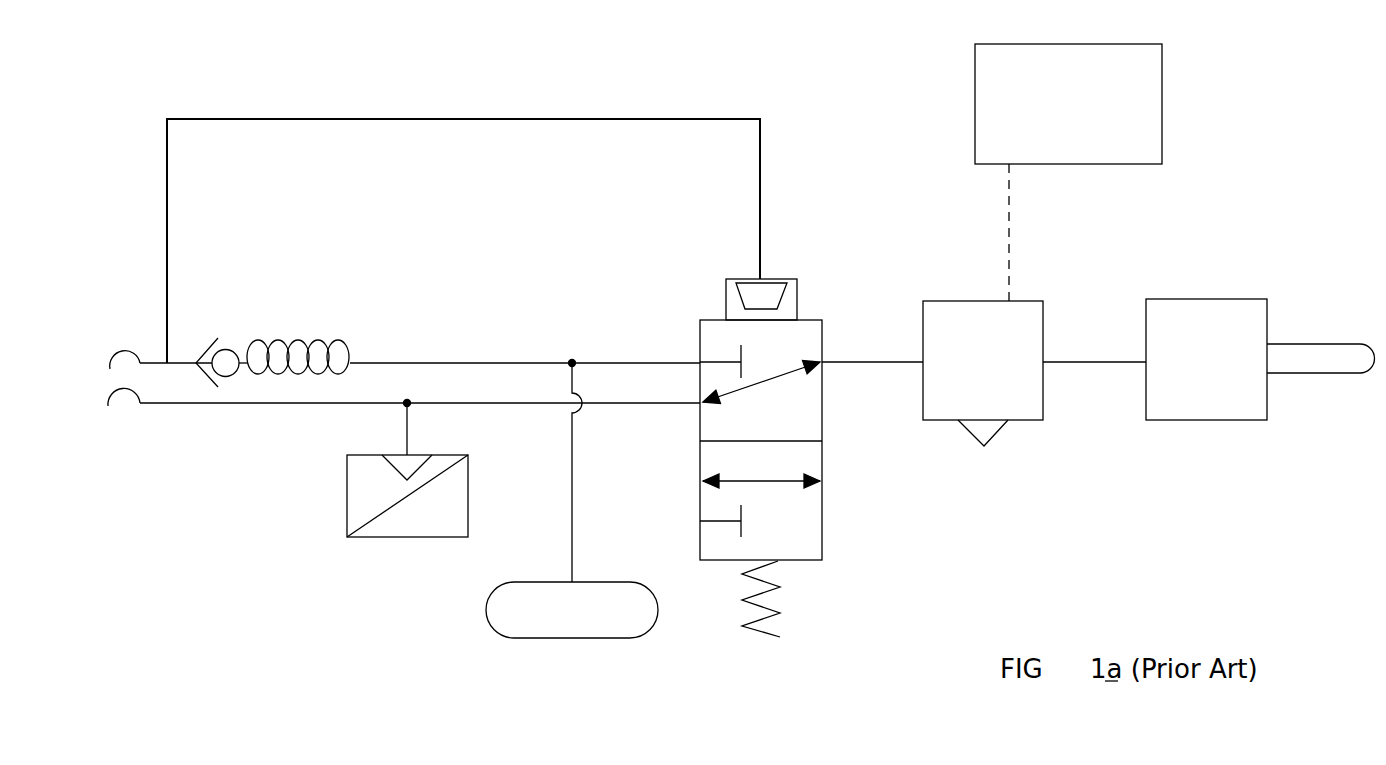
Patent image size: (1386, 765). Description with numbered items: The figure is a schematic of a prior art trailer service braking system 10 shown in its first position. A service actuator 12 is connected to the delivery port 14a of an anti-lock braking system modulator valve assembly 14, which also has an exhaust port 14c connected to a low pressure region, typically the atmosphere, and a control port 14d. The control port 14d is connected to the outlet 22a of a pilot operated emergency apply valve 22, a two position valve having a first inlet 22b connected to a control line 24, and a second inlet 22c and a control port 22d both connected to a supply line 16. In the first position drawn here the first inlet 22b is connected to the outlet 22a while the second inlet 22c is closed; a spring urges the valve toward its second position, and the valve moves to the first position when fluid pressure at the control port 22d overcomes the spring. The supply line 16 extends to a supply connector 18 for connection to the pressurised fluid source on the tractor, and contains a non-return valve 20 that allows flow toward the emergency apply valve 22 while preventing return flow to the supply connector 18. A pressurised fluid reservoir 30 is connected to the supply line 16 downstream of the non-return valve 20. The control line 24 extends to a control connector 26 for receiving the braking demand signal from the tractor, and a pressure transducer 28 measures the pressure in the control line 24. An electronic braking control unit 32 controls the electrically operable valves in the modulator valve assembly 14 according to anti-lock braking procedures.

The trailer service braking system 10 is at (866, 584).
The service actuator 12 is at (1260, 359).
The ABS modulator valve assembly 14 is at (983, 360).
The delivery port 14a is at (1043, 363).
The exhaust port 14c is at (984, 446).
The control port 14d is at (923, 363).
The supply line 16 is at (485, 362).
The supply connector 18 is at (122, 345).
The non-return valve 20 is at (300, 344).
The emergency apply valve 22 is at (700, 501).
The outlet 22a is at (822, 362).
The first inlet 22b is at (700, 403).
The second inlet 22c is at (700, 362).
The control port 22d is at (762, 280).
The control line 24 is at (516, 403).
The control connector 26 is at (124, 395).
The pressure transducer 28 is at (347, 490).
The pressurised fluid reservoir 30 is at (572, 500).
The electronic braking control unit 32 is at (1068, 172).